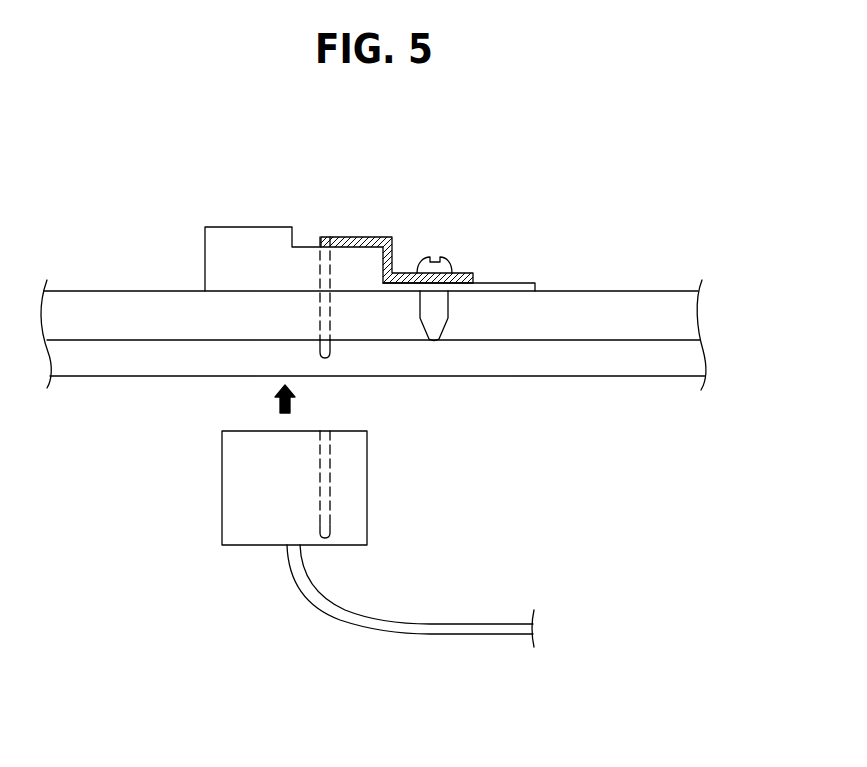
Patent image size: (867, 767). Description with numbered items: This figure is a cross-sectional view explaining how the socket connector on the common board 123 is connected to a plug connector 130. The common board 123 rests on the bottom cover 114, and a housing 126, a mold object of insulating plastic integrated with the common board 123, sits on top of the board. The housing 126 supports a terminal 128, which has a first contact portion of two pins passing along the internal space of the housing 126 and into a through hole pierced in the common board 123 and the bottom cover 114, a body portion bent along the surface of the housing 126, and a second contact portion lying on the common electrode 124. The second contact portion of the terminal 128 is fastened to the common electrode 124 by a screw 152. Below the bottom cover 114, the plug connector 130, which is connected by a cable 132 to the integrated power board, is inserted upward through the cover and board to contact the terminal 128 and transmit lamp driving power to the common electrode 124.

The bottom cover 114 is at (621, 363).
The common board 123 is at (620, 307).
The common electrode 124 is at (510, 289).
The housing 126 is at (254, 242).
The terminal 128 is at (360, 240).
The plug connector 130 is at (232, 488).
The cable 132 is at (455, 630).
The screw 152 is at (429, 258).